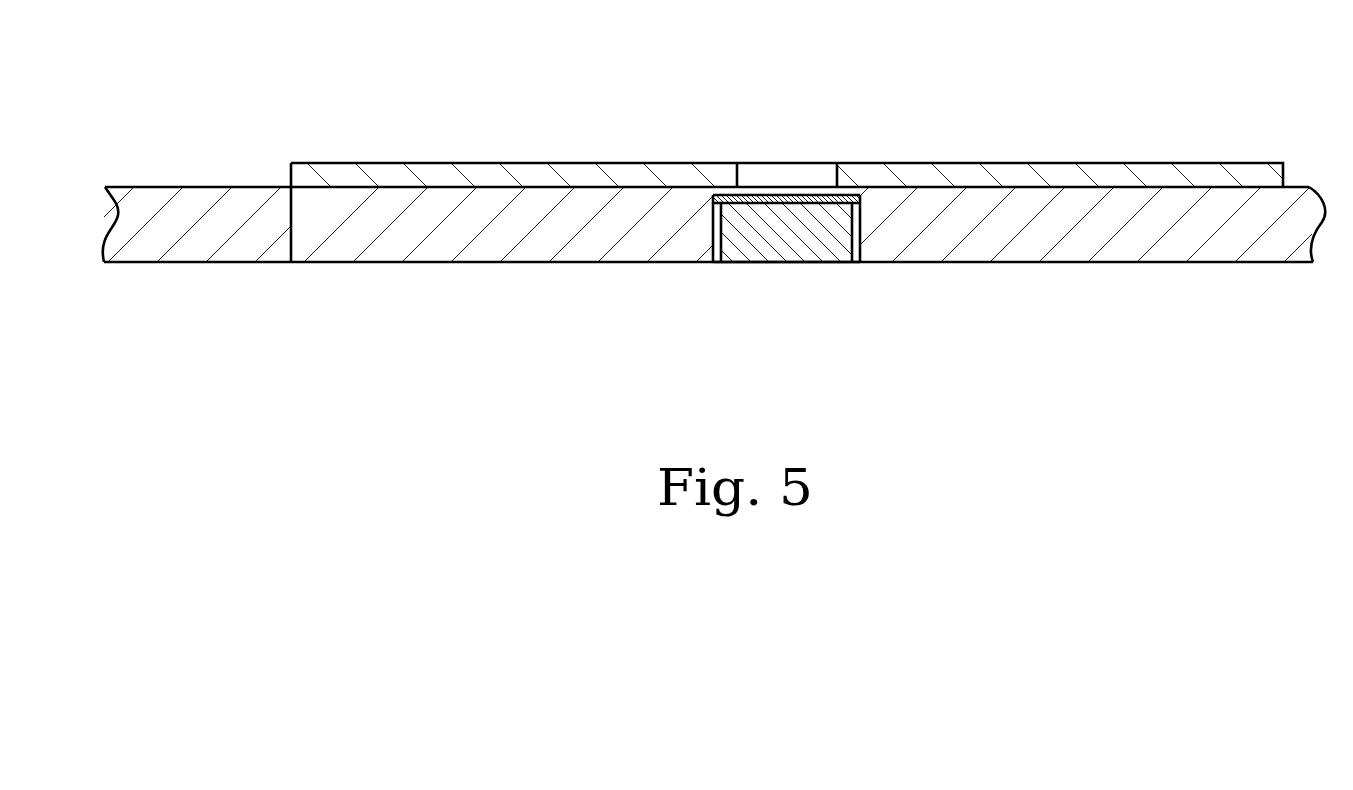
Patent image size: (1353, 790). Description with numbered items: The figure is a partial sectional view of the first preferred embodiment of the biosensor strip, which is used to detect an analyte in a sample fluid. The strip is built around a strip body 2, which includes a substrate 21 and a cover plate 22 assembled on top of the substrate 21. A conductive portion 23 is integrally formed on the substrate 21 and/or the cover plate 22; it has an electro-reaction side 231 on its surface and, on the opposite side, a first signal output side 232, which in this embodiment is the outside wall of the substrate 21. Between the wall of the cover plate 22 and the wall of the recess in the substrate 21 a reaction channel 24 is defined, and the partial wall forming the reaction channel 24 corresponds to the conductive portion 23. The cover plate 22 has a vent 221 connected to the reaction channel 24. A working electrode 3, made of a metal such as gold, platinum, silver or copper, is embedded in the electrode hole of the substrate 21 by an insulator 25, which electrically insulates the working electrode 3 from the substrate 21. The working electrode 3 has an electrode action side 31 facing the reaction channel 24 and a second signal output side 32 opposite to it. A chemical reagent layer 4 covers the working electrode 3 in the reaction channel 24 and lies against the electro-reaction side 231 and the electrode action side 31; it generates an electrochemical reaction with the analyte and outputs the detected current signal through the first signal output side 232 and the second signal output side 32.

The strip body 2 is at (701, 199).
The substrate 21 is at (151, 185).
The cover plate 22 is at (780, 120).
The vent 221 is at (752, 178).
The conductive portion 23 is at (822, 214).
The electro-reaction side 231 is at (715, 192).
The first signal output side 232 is at (682, 263).
The reaction channel 24 is at (785, 155).
The insulator 25 is at (864, 243).
The working electrode 3 is at (792, 226).
The electrode action side 31 is at (797, 198).
The second signal output side 32 is at (813, 263).
The chemical reagent layer 4 is at (848, 195).